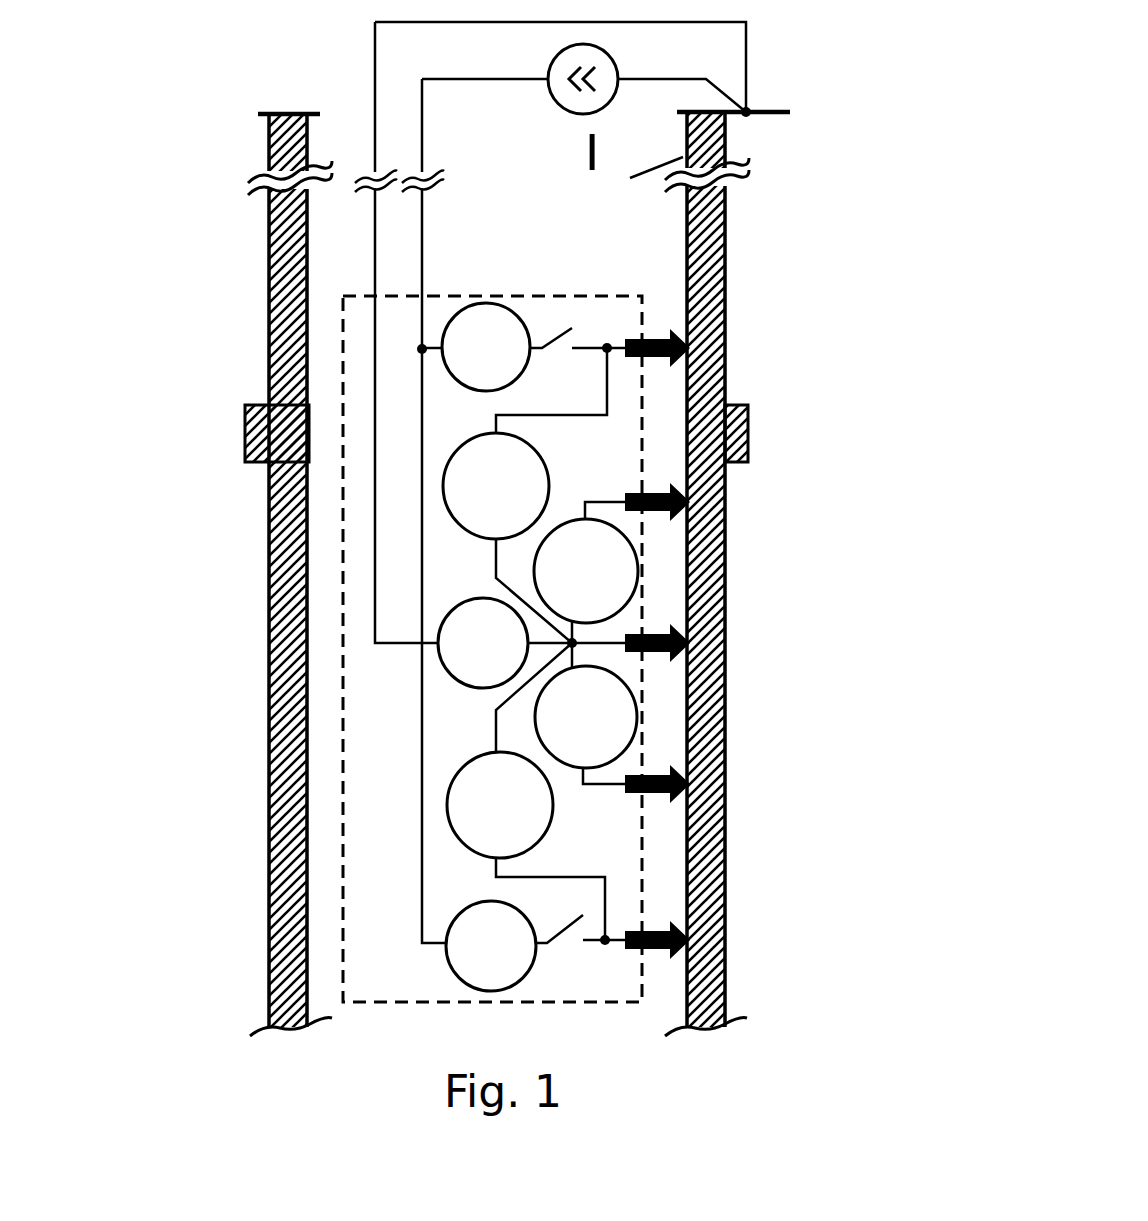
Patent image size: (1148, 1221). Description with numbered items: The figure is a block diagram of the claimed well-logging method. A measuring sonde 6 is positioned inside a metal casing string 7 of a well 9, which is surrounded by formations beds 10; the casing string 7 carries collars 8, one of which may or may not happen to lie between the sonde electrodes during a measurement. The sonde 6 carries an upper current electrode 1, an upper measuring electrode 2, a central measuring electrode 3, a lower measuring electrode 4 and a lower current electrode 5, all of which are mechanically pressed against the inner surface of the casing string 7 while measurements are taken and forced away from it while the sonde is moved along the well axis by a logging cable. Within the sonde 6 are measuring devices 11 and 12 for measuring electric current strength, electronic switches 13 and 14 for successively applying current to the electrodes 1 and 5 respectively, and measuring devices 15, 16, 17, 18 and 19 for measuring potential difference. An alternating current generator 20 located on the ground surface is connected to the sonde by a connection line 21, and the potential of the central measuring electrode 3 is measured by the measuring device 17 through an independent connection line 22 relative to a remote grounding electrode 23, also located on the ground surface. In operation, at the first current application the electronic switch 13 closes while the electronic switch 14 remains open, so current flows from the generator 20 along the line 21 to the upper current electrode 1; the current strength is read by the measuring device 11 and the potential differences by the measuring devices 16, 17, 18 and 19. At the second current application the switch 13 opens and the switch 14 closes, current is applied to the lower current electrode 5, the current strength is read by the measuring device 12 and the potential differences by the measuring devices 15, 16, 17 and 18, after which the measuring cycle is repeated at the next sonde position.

The upper current electrode 1 is at (830, 290).
The upper measuring electrode 2 is at (845, 472).
The central measuring electrode 3 is at (845, 595).
The lower measuring electrode 4 is at (845, 720).
The lower current electrode 5 is at (845, 890).
The measuring sonde 6 is at (558, 290).
The metal casing string 7 is at (268, 145).
The collar of the casing string 8 is at (247, 405).
The well 9 is at (723, 148).
The formations beds 10 is at (768, 263).
The measuring device for electric current strength 11 is at (437, 325).
The measuring device for electric current strength 12 is at (443, 915).
The electronic switch 13 is at (547, 325).
The electronic switch 14 is at (553, 917).
The measuring device for potential difference 15 is at (440, 458).
The measuring device for potential difference 16 is at (530, 557).
The measuring device for potential difference 17 is at (437, 613).
The measuring device for potential difference 18 is at (528, 713).
The measuring device for potential difference 19 is at (452, 770).
The alternating current generator 20 is at (618, 62).
The connection line 21 is at (412, 127).
The independent connection line 22 is at (367, 62).
The remote grounding electrode 23 is at (752, 106).